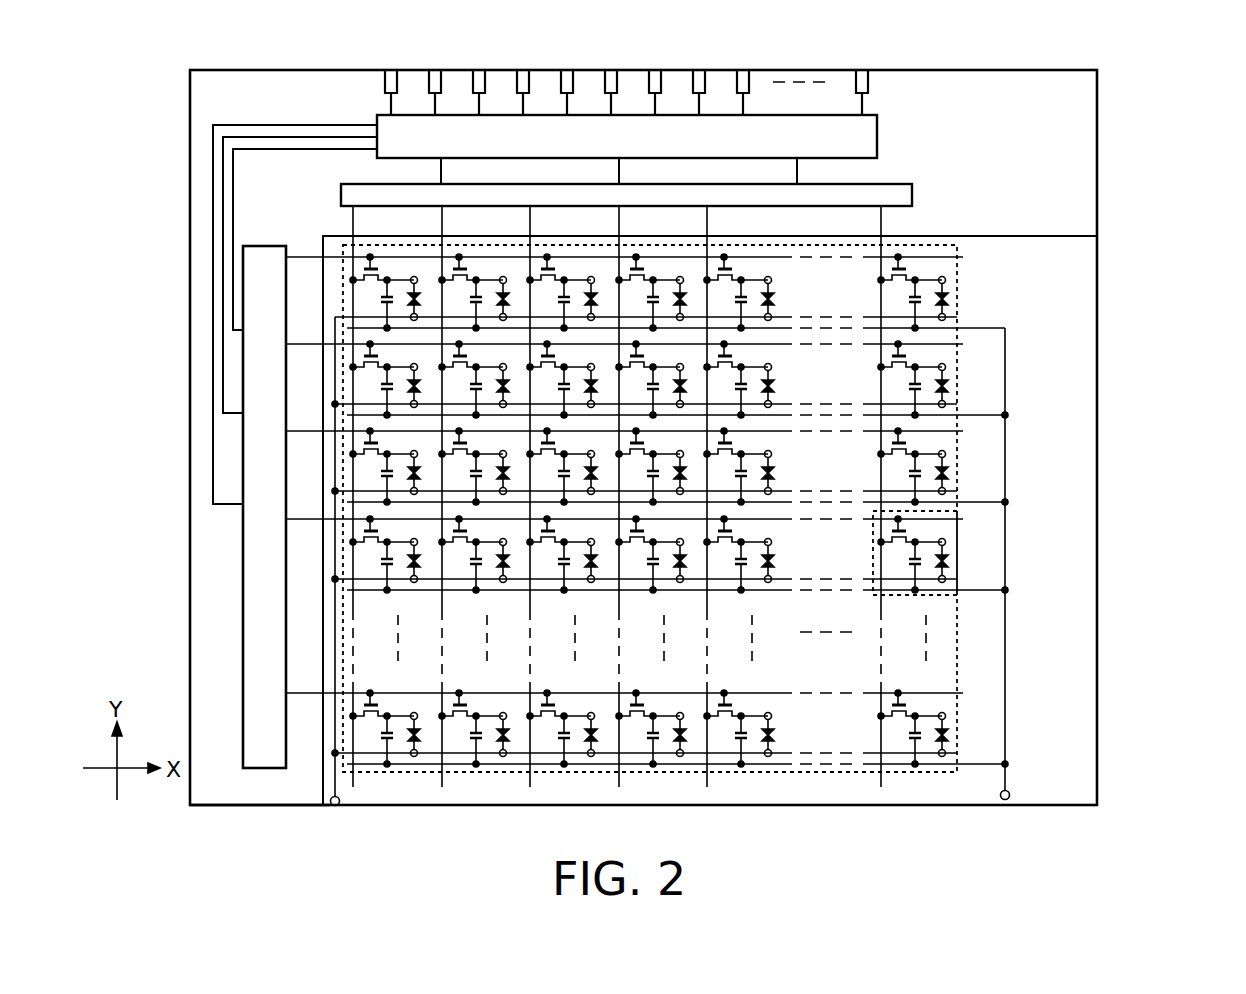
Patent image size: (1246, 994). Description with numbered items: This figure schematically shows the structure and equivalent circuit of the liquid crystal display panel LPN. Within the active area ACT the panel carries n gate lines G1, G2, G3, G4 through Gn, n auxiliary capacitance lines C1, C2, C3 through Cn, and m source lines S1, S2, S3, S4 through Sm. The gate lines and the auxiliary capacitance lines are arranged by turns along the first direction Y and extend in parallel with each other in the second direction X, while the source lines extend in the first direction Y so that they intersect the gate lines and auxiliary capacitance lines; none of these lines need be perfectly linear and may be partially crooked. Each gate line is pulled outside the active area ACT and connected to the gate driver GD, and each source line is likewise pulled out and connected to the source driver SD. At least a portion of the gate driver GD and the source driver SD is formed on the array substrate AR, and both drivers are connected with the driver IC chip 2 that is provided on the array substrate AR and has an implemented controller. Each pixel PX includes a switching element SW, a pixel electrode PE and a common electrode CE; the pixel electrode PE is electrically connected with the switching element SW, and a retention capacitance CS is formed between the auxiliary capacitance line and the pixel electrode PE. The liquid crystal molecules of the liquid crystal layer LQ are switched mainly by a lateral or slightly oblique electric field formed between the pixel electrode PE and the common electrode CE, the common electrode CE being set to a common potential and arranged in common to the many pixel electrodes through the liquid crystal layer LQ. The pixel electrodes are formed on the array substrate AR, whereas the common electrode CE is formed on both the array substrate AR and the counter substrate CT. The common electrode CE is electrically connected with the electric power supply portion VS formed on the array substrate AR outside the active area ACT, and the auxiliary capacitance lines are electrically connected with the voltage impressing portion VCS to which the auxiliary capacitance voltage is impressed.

The liquid crystal display panel LPN is at (1124, 84).
The driver IC chip 2 is at (877, 115).
The source driver SD is at (912, 190).
The gate driver GD is at (243, 628).
The counter substrate CT is at (1065, 236).
The active area ACT is at (957, 358).
The source line S1 is at (356, 224).
The source line S2 is at (445, 224).
The source line S3 is at (533, 224).
The source line S4 is at (622, 224).
The source line Sm is at (884, 224).
The gate line G1 is at (304, 257).
The gate line G2 is at (304, 344).
The gate line G3 is at (304, 431).
The gate line G4 is at (304, 519).
The gate line Gn is at (304, 693).
The auxiliary capacitance line C1 is at (982, 328).
The auxiliary capacitance line C2 is at (982, 415).
The auxiliary capacitance line C3 is at (982, 502).
The auxiliary capacitance line Cn is at (982, 764).
The pixel PX is at (957, 590).
The switching element SW is at (880, 530).
The retention capacitance CS is at (906, 560).
The pixel electrode PE is at (946, 539).
The liquid crystal layer LQ is at (947, 556).
The common electrode CE is at (947, 578).
The electric power supply portion VS is at (339, 805).
The voltage impressing portion VCS is at (1009, 792).
The array substrate AR is at (258, 798).